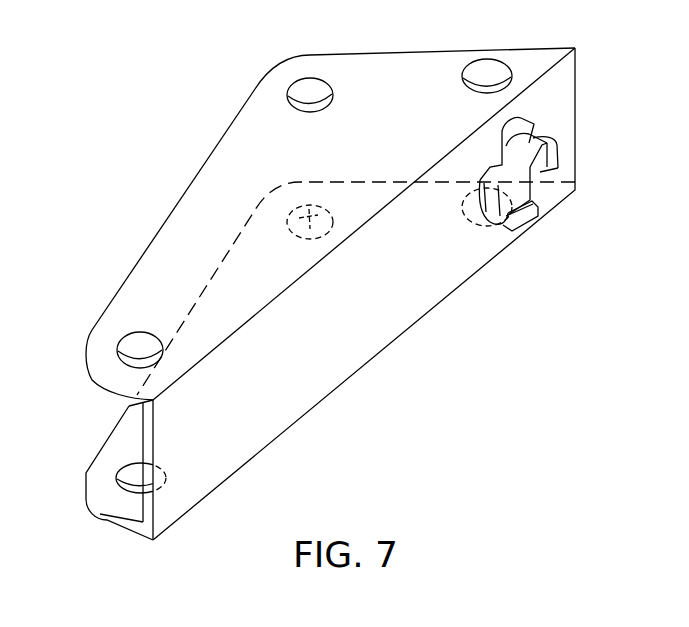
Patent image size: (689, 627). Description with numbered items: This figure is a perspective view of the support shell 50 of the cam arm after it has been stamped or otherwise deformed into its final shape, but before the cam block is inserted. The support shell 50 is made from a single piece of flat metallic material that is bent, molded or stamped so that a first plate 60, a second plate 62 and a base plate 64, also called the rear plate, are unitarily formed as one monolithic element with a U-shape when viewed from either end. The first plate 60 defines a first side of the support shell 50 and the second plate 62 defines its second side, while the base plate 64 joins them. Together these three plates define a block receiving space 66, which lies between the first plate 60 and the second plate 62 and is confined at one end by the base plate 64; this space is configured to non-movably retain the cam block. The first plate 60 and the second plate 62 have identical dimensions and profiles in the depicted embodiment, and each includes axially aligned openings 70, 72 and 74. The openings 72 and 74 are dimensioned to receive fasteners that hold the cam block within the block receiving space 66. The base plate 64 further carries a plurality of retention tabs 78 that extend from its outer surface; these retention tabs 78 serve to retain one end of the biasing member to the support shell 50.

The support shell 50 is at (117, 195).
The first plate 60 is at (258, 142).
The second plate 62 is at (112, 457).
The base plate 64 is at (277, 375).
The block receiving space 66 is at (143, 429).
The openings 70 is at (141, 340).
The openings 72 is at (315, 87).
The openings 74 is at (481, 68).
The retention tabs 78 is at (525, 128).